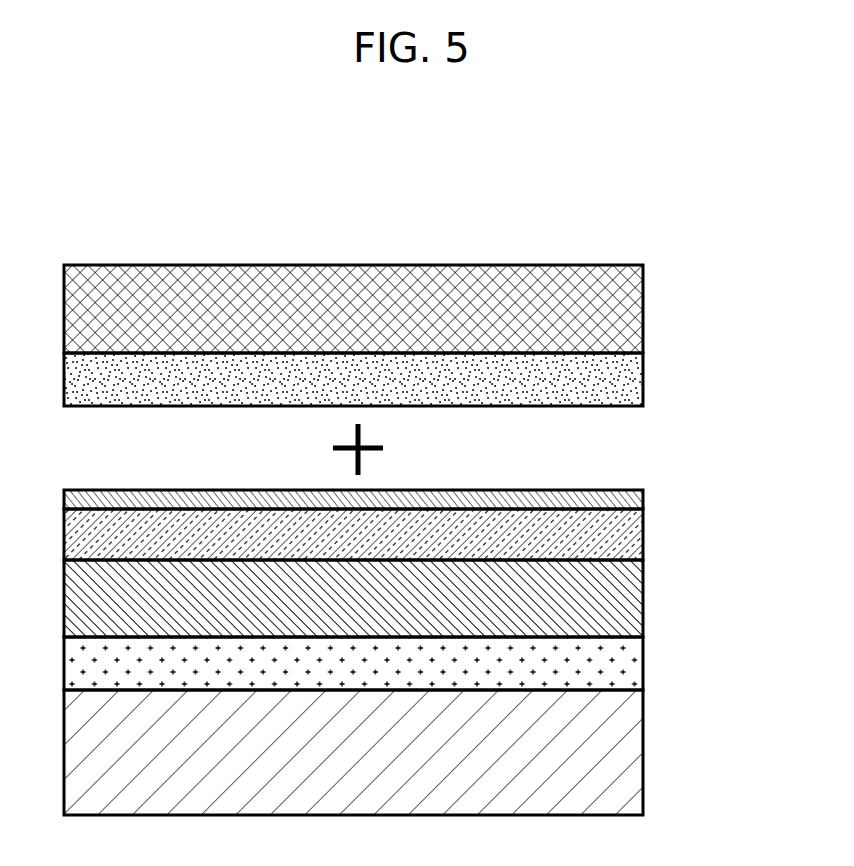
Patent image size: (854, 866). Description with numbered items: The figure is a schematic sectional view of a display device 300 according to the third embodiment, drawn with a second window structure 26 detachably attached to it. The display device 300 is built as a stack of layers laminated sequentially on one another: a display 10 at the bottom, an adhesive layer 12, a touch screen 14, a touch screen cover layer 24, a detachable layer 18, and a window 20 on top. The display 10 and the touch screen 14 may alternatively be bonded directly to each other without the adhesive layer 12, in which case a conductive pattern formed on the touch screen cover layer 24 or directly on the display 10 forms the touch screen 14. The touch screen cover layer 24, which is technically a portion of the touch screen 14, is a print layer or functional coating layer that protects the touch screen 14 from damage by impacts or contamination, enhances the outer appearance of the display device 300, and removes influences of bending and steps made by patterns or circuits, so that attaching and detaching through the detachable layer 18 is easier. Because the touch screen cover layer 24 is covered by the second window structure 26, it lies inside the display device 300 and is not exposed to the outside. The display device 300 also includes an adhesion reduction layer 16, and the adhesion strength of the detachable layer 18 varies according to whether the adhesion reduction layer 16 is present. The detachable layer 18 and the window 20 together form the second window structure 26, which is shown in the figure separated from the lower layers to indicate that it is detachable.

The display device 300 is at (90, 194).
The display 10 is at (636, 751).
The adhesive layer 12 is at (636, 655).
The touch screen 14 is at (636, 592).
The touch screen cover layer 24 is at (636, 531).
The adhesion reduction layer 16 is at (636, 502).
The detachable layer 18 is at (385, 379).
The window 20 is at (636, 311).
The second window structure 26 is at (413, 335).